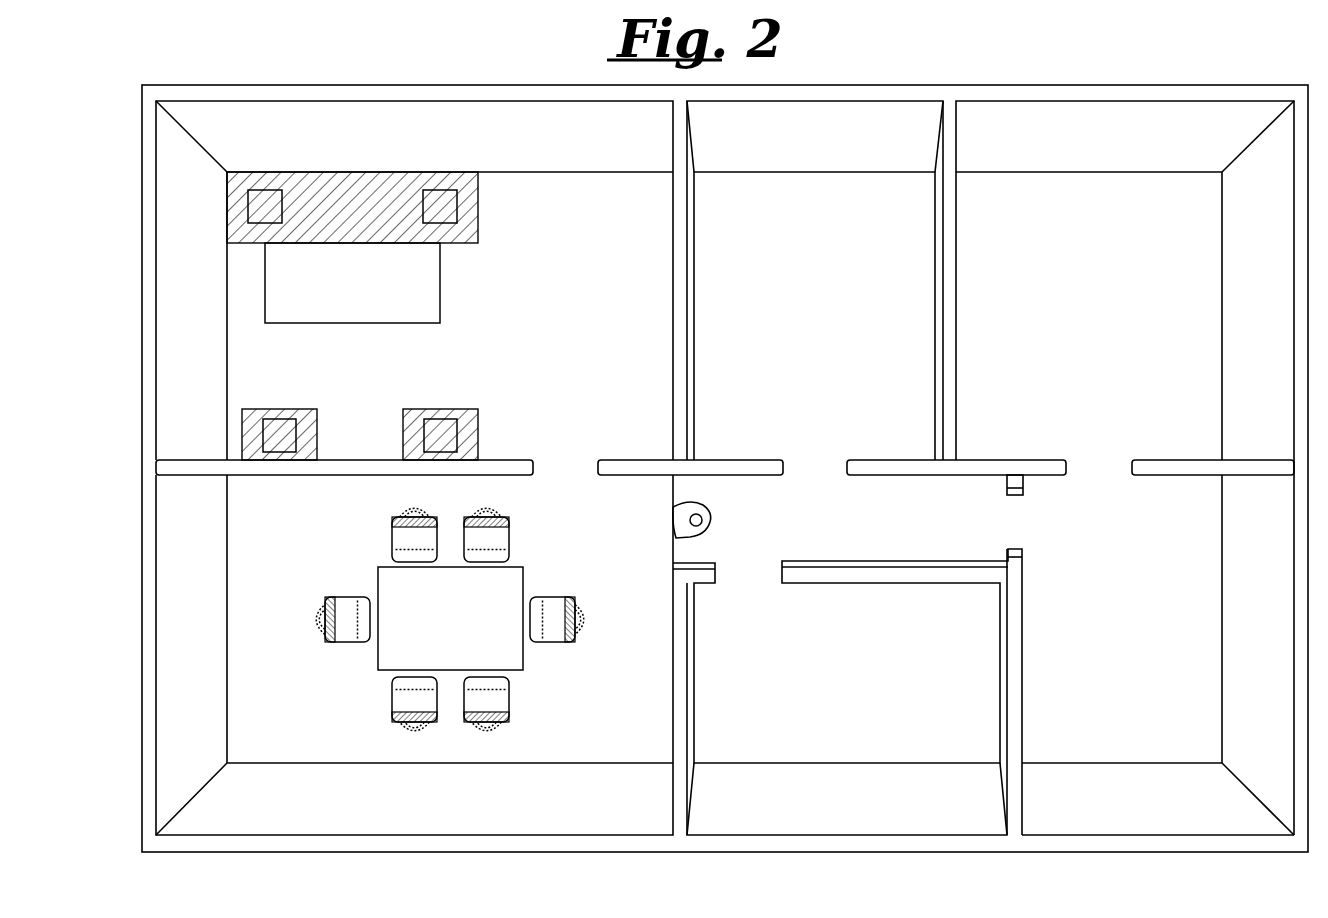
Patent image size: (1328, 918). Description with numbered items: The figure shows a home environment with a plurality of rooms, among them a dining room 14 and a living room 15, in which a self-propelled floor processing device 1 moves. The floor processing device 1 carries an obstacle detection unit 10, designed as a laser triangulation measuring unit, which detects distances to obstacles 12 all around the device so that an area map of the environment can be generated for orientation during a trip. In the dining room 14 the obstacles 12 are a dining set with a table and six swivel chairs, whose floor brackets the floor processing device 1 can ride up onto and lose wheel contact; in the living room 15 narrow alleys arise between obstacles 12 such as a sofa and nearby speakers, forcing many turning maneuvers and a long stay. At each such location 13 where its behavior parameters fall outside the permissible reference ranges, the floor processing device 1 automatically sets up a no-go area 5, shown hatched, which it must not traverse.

The floor processing device 1 is at (719, 514).
The no-go area 5 is at (478, 208).
The obstacle detection unit 10 is at (698, 522).
The obstacle 12 is at (268, 190).
The location 13 is at (237, 257).
The dining room 14 is at (252, 595).
The living room 15 is at (268, 357).